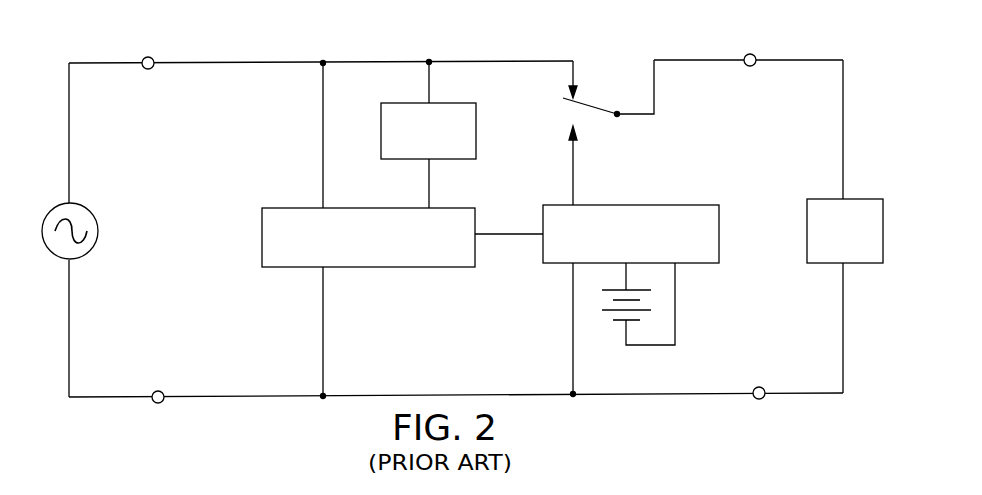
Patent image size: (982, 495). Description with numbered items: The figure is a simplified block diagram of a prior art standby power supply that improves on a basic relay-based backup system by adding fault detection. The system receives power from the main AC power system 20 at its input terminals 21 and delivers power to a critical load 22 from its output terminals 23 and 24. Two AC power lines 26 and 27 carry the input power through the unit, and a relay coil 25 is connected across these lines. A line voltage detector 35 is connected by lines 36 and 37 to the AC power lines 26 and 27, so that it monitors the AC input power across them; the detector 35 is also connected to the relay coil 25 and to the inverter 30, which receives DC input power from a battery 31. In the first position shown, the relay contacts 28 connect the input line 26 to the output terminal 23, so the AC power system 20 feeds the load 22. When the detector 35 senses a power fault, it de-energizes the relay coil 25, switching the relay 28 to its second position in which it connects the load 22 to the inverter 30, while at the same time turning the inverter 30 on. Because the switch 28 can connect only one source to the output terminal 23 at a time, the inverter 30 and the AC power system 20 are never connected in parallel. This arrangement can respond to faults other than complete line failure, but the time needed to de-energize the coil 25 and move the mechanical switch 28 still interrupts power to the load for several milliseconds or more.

The main AC power system 20 is at (97, 216).
The input terminals 21 is at (151, 57).
The critical load 22 is at (813, 199).
The output terminal 23 is at (752, 54).
The output terminal 24 is at (760, 387).
The relay coil 25 is at (381, 117).
The AC power line 26 is at (455, 61).
The AC power line 27 is at (258, 397).
The relay contacts 28 is at (598, 108).
The inverter 30 is at (640, 205).
The battery 31 is at (616, 322).
The line voltage detector 35 is at (301, 208).
The line 36 is at (323, 142).
The line 37 is at (323, 318).